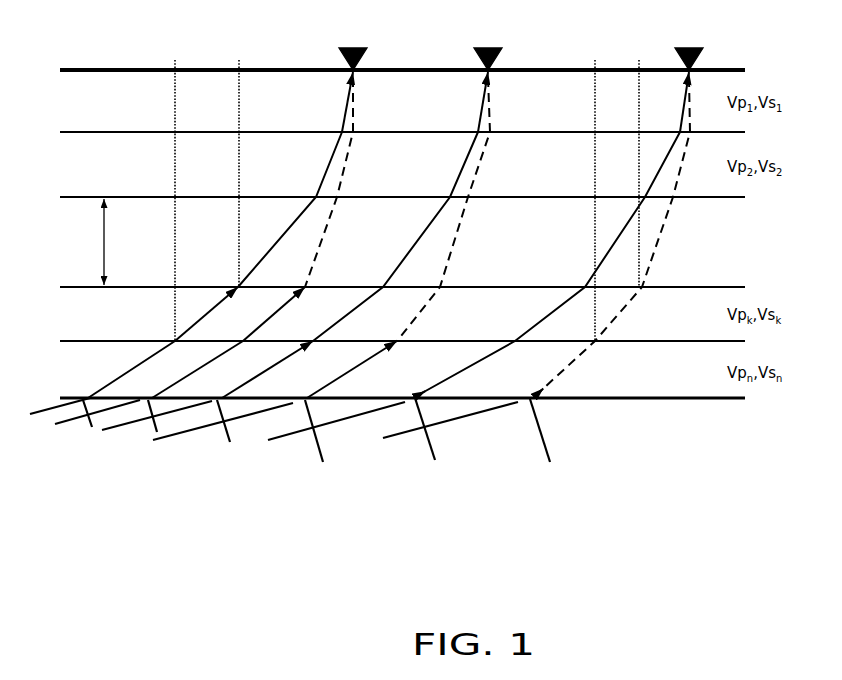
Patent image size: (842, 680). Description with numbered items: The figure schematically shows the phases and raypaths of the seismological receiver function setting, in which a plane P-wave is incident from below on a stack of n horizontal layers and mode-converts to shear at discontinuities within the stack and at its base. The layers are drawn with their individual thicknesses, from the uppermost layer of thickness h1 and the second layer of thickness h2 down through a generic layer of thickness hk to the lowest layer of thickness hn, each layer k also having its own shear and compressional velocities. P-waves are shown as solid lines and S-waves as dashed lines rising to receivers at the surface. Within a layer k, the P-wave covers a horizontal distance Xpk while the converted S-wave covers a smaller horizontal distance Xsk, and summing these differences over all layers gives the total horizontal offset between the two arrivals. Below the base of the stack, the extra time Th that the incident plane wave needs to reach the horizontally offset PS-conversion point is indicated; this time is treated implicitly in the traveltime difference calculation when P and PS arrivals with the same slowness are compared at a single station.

The thickness of layer 1 h1 is at (104, 72).
The thickness of layer 2 h2 is at (104, 134).
The thickness of layer k hk is at (104, 289).
The thickness of layer n hn is at (104, 343).
The horizontal P-wave travel distance in layer k Xpk is at (237, 62).
The horizontal S-wave travel distance in layer k Xsk is at (637, 62).
The extra time Th is at (535, 417).